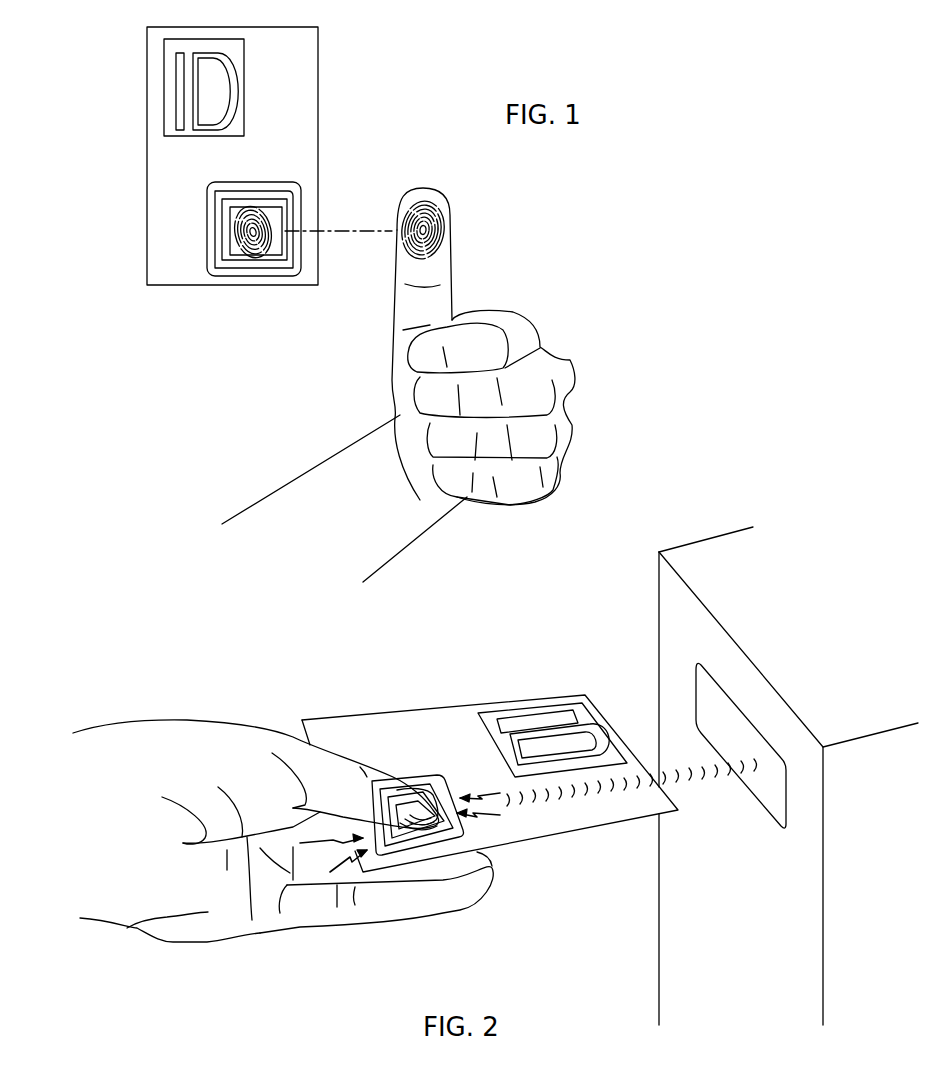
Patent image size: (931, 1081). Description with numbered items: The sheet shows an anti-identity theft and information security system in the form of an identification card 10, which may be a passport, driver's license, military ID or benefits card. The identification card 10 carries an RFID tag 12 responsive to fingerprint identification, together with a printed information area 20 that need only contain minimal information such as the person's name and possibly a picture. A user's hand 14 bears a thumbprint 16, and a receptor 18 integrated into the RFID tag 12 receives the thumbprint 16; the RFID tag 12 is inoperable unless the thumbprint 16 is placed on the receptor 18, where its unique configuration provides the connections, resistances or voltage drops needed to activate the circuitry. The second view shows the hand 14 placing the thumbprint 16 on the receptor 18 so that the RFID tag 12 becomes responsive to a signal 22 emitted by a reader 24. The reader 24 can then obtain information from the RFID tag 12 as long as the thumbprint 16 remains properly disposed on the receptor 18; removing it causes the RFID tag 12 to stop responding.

In FIG. 1, the identification card 10 is at (303, 86).
In FIG. 2, the identification card 10 is at (490, 778).
In FIG. 1, the RFID tag 12 is at (300, 193).
In FIG. 2, the RFID tag 12 is at (458, 827).
In FIG. 1, the hand 14 is at (553, 375).
In FIG. 2, the hand 14 is at (203, 733).
In FIG. 1, the thumbprint 16 is at (433, 230).
In FIG. 1, the receptor 18 is at (248, 248).
In FIG. 2, the receptor 18 is at (400, 828).
In FIG. 1, the printed information area 20 is at (178, 92).
In FIG. 2, the printed information area 20 is at (528, 740).
In FIG. 2, the signal 22 is at (697, 781).
In FIG. 2, the reader 24 is at (716, 552).